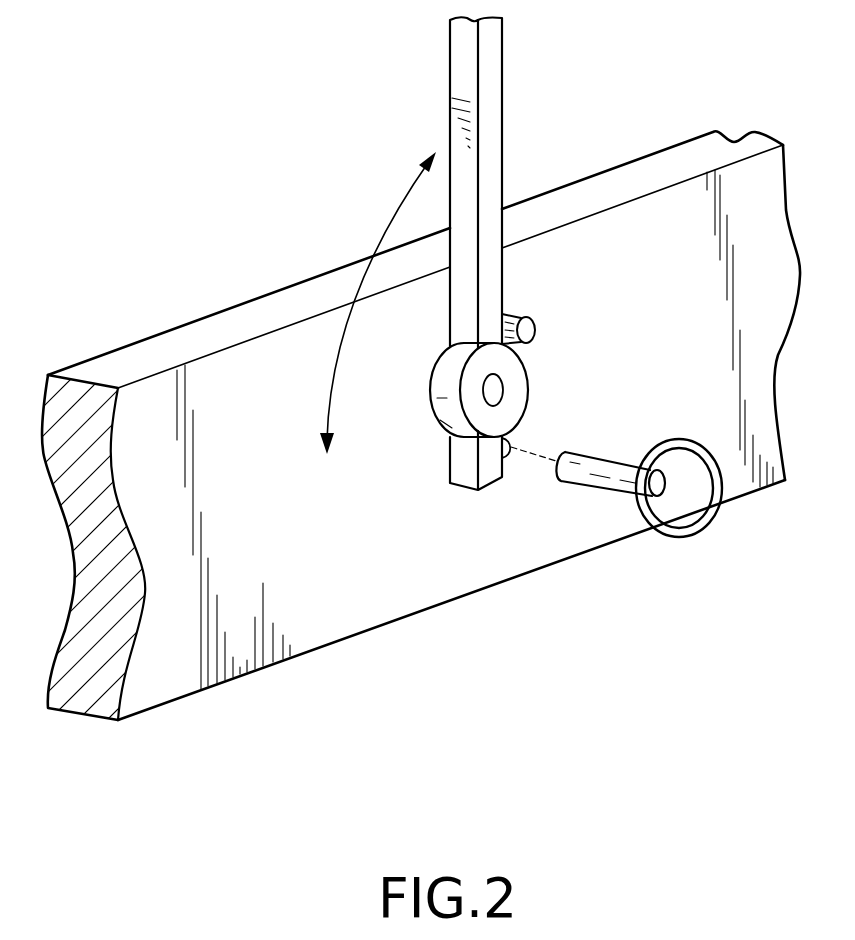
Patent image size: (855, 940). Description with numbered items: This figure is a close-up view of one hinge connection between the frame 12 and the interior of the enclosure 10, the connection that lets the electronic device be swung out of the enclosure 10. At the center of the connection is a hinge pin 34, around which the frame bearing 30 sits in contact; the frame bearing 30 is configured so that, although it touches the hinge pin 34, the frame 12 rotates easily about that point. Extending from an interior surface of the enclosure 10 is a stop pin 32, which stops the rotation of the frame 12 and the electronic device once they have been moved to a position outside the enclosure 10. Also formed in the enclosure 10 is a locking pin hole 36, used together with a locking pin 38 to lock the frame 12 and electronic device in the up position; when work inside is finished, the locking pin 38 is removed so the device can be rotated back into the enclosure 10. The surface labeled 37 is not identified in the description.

The enclosure 10 is at (167, 334).
The frame 12 is at (502, 90).
The frame bearing 30 is at (435, 427).
The stop pin 32 is at (532, 316).
The hinge pin 34 is at (498, 390).
The locking pin hole 36 is at (507, 460).
The front surface 37 is at (360, 610).
The locking pin 38 is at (617, 458).